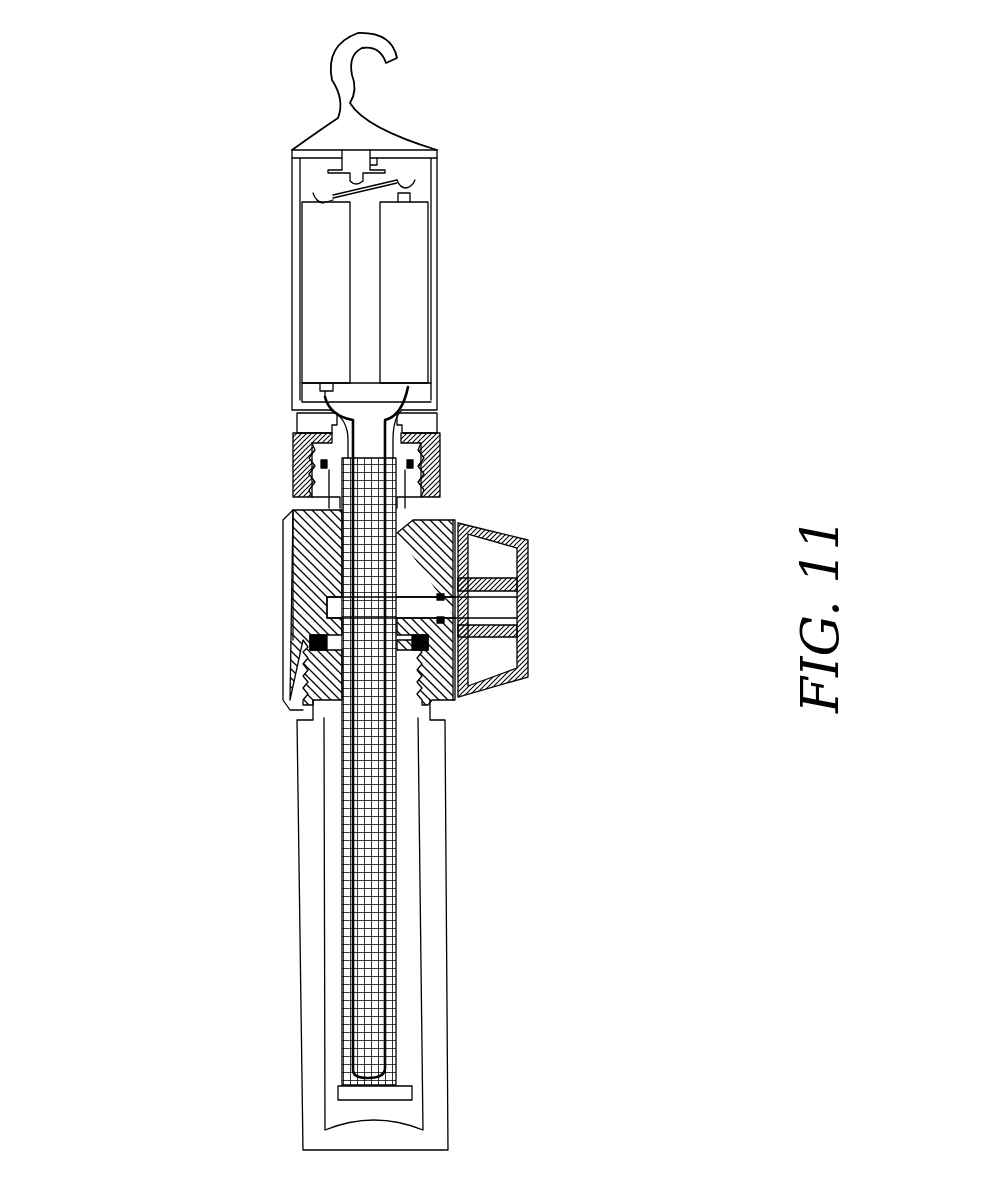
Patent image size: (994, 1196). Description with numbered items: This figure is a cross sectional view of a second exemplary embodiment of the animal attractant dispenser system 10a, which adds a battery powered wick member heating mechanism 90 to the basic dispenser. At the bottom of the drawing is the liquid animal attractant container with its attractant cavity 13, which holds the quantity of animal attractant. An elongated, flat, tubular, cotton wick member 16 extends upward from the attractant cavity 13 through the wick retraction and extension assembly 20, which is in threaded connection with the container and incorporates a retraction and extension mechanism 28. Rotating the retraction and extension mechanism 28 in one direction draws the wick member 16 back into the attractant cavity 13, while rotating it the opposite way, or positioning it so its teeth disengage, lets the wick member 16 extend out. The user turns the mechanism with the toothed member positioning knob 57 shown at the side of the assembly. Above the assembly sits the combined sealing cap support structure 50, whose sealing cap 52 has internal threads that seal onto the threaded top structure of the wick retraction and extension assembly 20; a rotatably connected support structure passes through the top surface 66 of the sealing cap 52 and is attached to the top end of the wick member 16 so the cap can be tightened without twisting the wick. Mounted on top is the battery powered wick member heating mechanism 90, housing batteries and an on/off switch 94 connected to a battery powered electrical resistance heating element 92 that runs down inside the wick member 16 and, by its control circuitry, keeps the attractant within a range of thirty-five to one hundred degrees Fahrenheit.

The animal attractant dispenser system 10a is at (112, 295).
The attractant cavity 13 is at (335, 972).
The wick member 16 is at (347, 795).
The wick retraction and extension assembly 20 is at (254, 630).
The retraction and extension mechanism 28 is at (550, 628).
The combined sealing cap support structure 50 is at (254, 475).
The sealing cap 52 is at (296, 447).
The toothed member positioning knob 57 is at (488, 530).
The top surface 66 is at (297, 433).
The battery powered wick member heating mechanism 90 is at (460, 242).
The electrical resistance heating element 92 is at (430, 392).
The on/off switch 94 is at (358, 148).